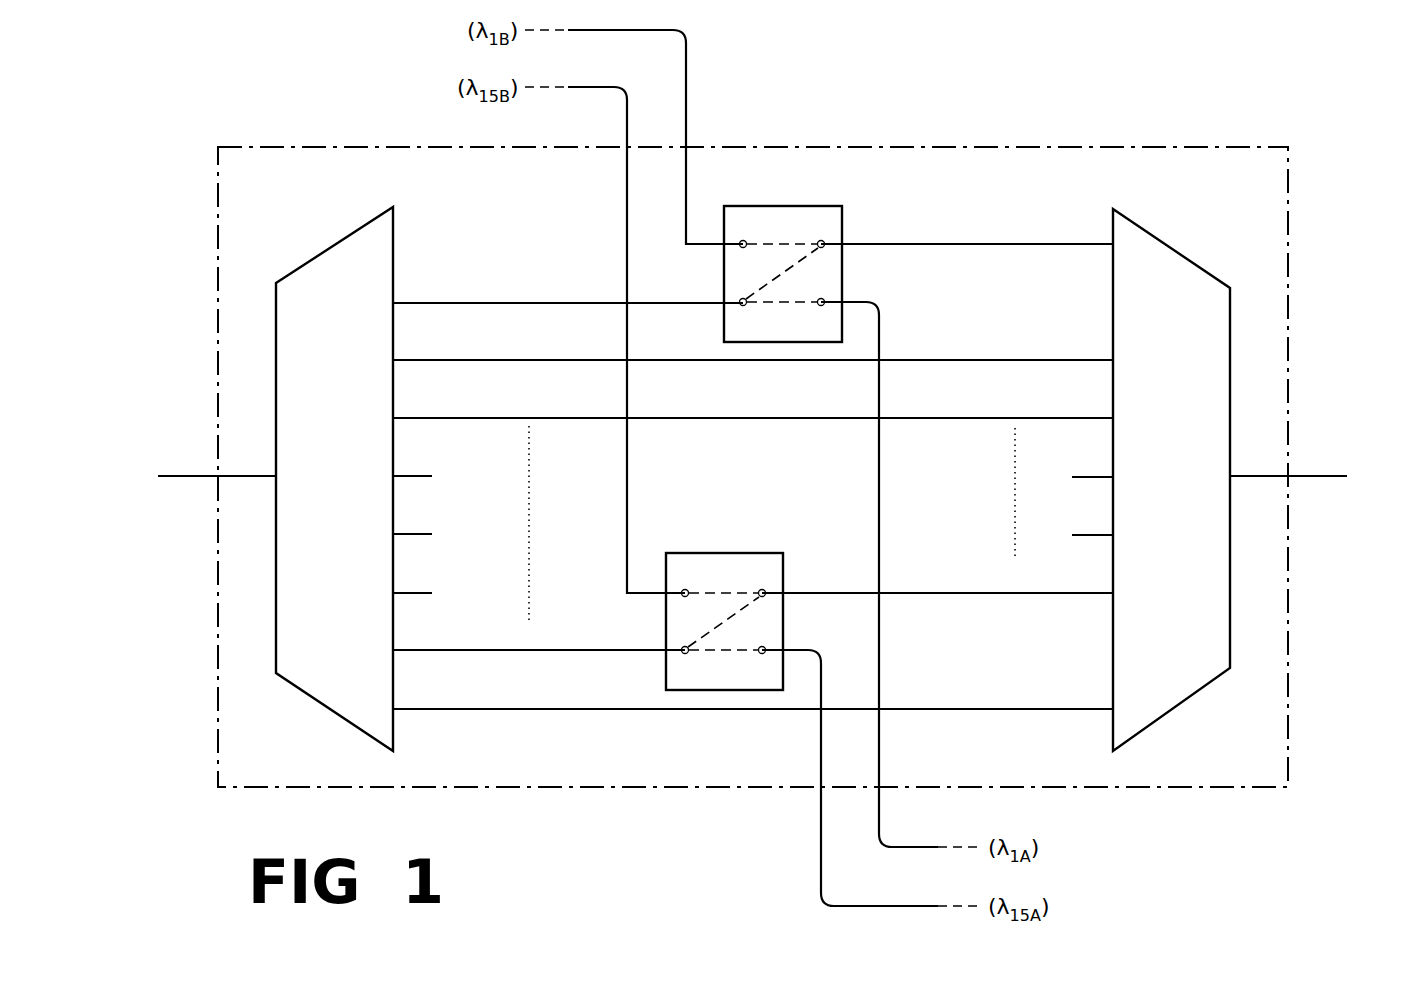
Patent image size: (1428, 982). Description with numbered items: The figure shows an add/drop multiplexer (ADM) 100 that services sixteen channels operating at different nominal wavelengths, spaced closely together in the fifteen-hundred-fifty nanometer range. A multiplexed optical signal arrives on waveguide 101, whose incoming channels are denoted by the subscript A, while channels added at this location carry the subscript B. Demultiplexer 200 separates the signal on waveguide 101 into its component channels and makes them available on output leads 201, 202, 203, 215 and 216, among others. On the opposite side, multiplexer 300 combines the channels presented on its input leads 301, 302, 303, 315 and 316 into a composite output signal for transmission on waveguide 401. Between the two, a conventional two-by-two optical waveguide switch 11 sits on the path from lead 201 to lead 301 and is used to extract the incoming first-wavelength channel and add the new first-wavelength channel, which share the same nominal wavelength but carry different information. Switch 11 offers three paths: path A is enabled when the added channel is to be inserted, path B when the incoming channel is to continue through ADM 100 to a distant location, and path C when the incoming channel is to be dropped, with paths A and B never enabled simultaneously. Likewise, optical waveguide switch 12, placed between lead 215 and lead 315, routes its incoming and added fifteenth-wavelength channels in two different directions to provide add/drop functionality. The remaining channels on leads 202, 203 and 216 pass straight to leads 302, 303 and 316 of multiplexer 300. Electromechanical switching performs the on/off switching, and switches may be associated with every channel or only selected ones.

The add/drop multiplexer 100 is at (370, 116).
The waveguide 101 is at (178, 476).
The demultiplexer 200 is at (333, 240).
The multiplexer 300 is at (1172, 240).
The waveguide 401 is at (1330, 476).
The optical waveguide switch 11 is at (782, 206).
The optical waveguide switch 12 is at (722, 553).
The output lead 201 is at (433, 303).
The output lead 202 is at (433, 360).
The output lead 203 is at (433, 418).
The output lead 215 is at (433, 650).
The output lead 216 is at (433, 709).
The input lead 301 is at (1072, 244).
The input lead 302 is at (1072, 360).
The input lead 303 is at (1072, 418).
The input lead 315 is at (1072, 593).
The input lead 316 is at (1072, 709).